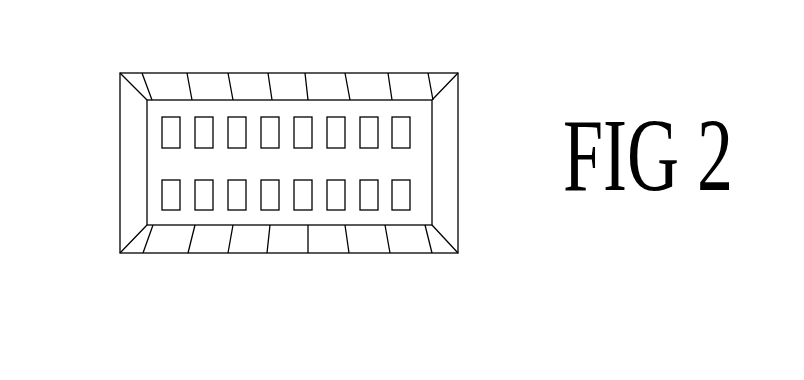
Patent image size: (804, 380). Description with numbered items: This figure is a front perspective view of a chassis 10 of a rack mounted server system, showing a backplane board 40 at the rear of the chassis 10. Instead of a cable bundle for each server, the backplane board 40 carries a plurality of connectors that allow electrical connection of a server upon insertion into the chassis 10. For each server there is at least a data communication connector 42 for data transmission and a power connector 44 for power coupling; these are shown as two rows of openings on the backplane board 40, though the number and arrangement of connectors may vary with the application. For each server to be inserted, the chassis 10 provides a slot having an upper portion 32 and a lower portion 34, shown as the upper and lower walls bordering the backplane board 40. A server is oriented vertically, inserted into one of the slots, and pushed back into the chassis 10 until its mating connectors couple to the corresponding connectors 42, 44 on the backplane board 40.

The chassis 10 is at (465, 135).
The upper portion 32 is at (430, 90).
The lower portion 34 is at (427, 233).
The backplane board 40 is at (172, 167).
The data communication connector 42 is at (168, 135).
The power connector 44 is at (173, 198).